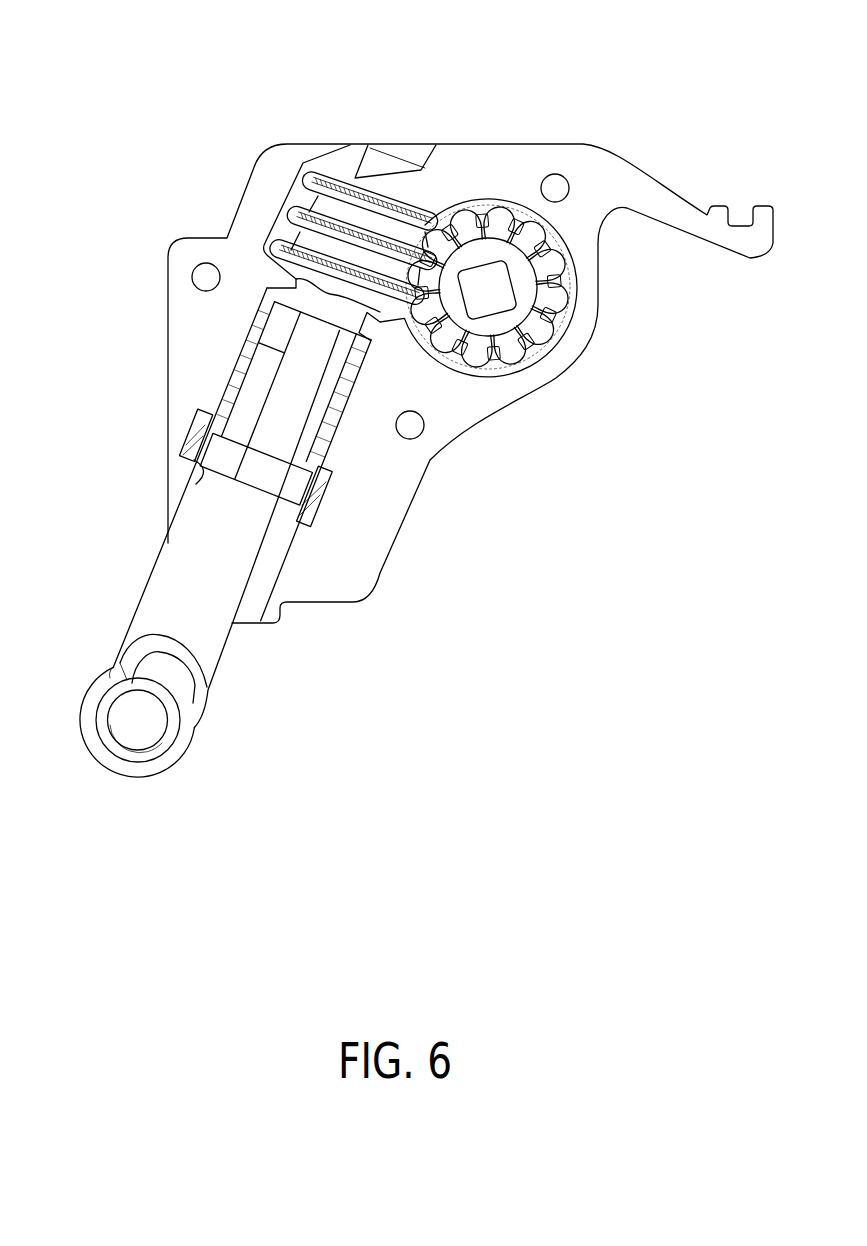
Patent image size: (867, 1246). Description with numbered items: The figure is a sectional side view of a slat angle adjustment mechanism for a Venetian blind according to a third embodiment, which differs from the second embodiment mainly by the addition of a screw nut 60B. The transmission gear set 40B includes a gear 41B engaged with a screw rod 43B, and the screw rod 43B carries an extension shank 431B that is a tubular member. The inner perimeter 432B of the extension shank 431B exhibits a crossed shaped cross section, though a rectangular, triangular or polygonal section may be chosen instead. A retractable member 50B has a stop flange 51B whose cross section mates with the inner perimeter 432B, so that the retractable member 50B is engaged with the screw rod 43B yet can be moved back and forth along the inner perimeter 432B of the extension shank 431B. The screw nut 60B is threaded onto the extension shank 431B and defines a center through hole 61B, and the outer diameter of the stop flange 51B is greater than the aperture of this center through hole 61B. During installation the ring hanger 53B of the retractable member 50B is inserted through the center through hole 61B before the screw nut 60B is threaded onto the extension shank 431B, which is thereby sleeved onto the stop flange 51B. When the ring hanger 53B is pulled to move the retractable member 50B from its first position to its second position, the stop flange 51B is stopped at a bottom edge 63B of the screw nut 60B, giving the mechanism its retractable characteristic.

The transmission gear set 40B is at (525, 58).
The gear 41B is at (505, 211).
The screw rod 43B is at (368, 185).
The extension shank 431B is at (345, 420).
The inner perimeter 432B is at (280, 350).
The stop flange 51B is at (253, 468).
The screw nut 60B is at (200, 418).
The center through hole 61B is at (205, 478).
The bottom edge 63B is at (192, 456).
The retractable member 50B is at (150, 578).
The ring hanger 53B is at (185, 737).